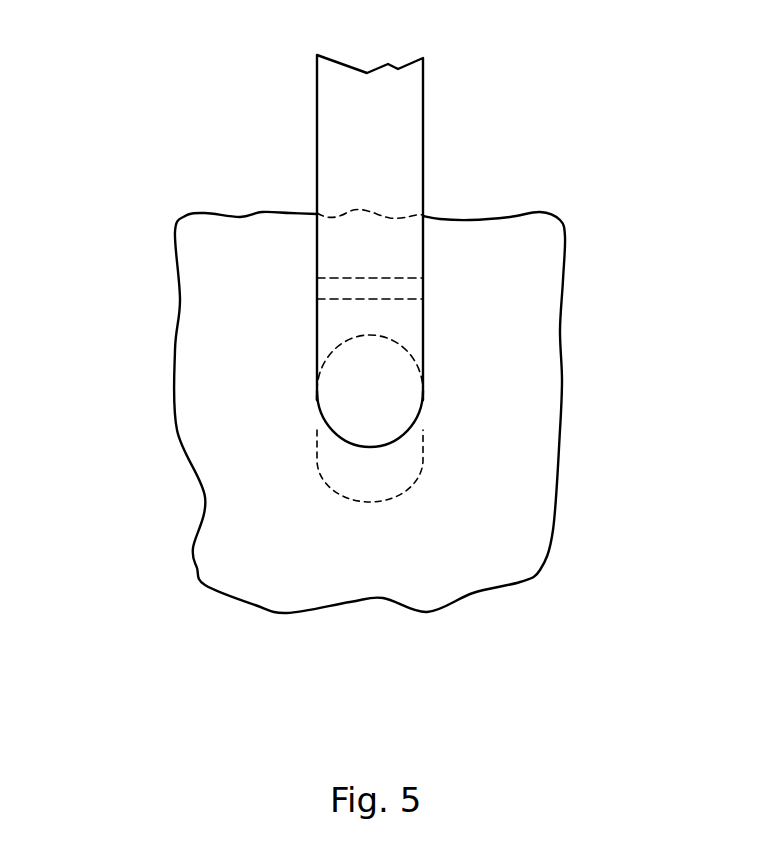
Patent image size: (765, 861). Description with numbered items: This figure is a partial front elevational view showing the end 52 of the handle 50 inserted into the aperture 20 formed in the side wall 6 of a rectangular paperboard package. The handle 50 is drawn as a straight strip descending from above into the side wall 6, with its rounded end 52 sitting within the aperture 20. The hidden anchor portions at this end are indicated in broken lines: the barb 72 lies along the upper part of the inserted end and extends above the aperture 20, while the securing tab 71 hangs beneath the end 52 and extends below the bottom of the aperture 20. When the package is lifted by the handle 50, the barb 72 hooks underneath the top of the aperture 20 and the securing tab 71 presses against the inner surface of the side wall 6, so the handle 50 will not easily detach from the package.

The side wall 6 is at (522, 542).
The handle 50 is at (390, 115).
The barb 72 is at (400, 318).
The end 52 is at (387, 415).
The securing tab 71 is at (405, 462).
The aperture 20 is at (316, 397).